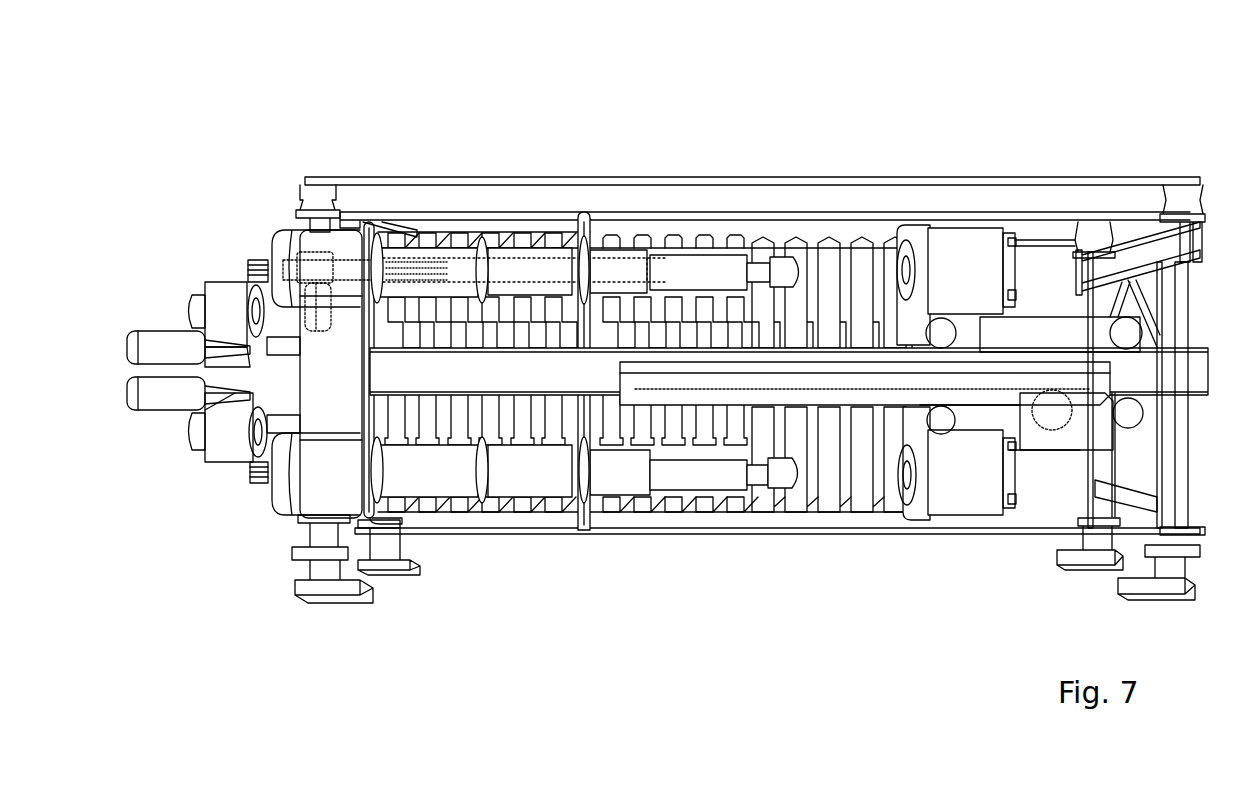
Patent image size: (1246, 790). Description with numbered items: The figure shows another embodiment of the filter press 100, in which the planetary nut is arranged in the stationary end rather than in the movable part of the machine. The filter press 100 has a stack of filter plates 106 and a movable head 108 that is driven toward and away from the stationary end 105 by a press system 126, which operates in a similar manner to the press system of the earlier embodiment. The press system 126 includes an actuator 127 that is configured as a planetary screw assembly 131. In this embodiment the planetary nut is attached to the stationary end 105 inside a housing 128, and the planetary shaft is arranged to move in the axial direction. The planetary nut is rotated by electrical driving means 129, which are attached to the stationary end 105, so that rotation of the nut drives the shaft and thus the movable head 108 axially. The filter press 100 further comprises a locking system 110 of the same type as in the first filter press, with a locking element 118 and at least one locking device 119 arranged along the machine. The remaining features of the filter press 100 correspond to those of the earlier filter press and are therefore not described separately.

The filter press 100 is at (393, 72).
The stationary end 105 is at (350, 386).
The filter plates 106 is at (820, 273).
The movable head 108 is at (982, 487).
The locking system 110 is at (926, 163).
The locking element 118 is at (710, 270).
The locking device 119 is at (1010, 238).
The press system 126 is at (454, 198).
The actuator 127 is at (334, 236).
The housing 128 is at (302, 242).
The electrical driving means 129 is at (150, 340).
The planetary screw assembly 131 is at (360, 236).